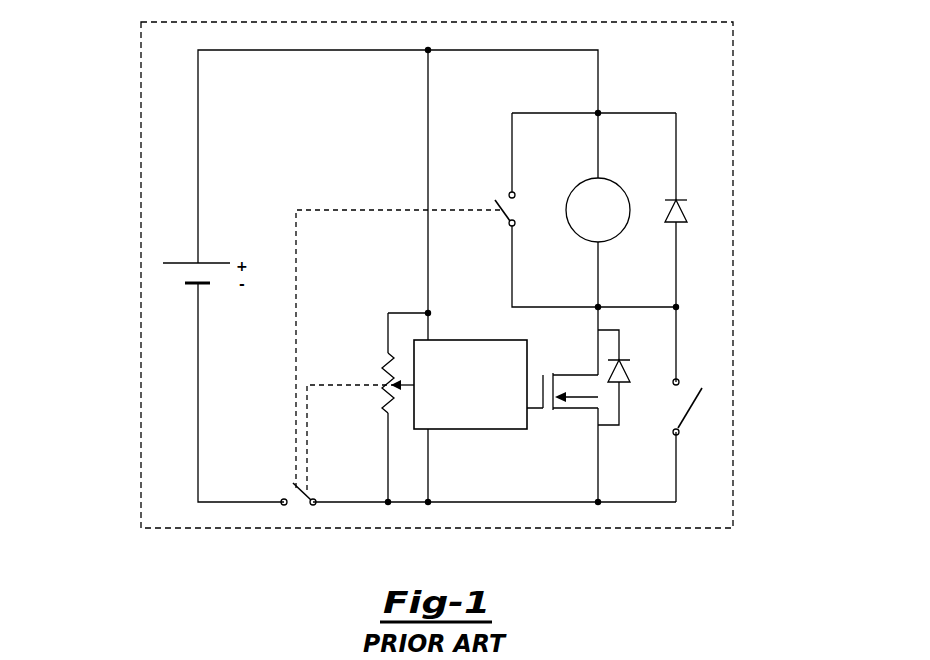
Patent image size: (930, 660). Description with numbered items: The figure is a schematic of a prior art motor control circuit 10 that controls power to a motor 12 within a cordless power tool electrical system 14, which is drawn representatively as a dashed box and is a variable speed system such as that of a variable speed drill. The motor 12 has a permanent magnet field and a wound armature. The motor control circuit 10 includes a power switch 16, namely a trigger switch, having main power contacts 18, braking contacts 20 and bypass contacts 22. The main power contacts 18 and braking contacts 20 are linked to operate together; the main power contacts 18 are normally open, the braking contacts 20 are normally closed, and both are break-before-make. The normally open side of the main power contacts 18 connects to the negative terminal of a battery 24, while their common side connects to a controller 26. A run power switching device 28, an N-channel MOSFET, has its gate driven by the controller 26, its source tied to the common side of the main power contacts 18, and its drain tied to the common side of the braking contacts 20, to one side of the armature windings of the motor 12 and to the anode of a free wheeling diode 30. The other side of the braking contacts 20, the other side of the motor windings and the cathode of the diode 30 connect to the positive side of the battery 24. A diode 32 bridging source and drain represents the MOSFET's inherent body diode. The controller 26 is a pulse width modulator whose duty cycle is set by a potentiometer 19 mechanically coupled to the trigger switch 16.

The motor control circuit 10 is at (168, 350).
The motor 12 is at (614, 179).
The cordless power tool electrical system 14 is at (733, 63).
The power switch 16 is at (486, 240).
The main power contacts 18 is at (291, 488).
The potentiometer 19 is at (387, 360).
The braking contacts 20 is at (518, 216).
The bypass contacts 22 is at (693, 410).
The battery 24 is at (260, 270).
The controller 26 is at (490, 430).
The run power switching device 28 is at (578, 373).
The free wheeling diode 30 is at (686, 213).
The diode 32 is at (630, 372).